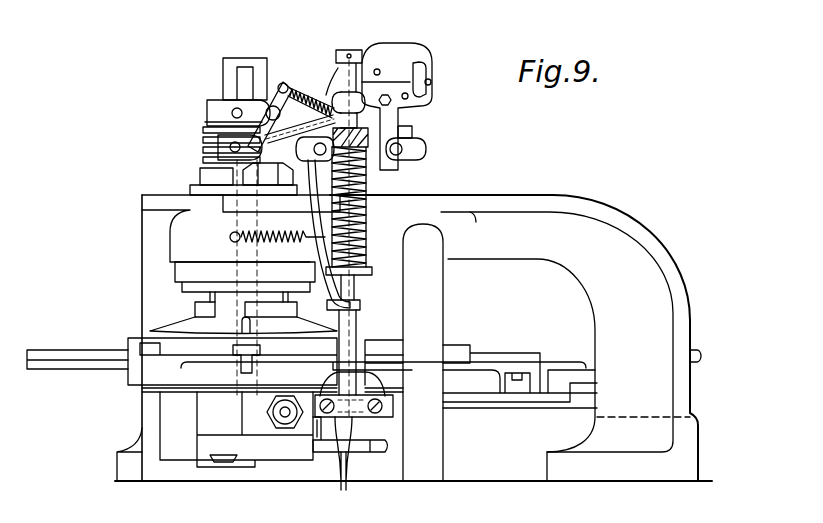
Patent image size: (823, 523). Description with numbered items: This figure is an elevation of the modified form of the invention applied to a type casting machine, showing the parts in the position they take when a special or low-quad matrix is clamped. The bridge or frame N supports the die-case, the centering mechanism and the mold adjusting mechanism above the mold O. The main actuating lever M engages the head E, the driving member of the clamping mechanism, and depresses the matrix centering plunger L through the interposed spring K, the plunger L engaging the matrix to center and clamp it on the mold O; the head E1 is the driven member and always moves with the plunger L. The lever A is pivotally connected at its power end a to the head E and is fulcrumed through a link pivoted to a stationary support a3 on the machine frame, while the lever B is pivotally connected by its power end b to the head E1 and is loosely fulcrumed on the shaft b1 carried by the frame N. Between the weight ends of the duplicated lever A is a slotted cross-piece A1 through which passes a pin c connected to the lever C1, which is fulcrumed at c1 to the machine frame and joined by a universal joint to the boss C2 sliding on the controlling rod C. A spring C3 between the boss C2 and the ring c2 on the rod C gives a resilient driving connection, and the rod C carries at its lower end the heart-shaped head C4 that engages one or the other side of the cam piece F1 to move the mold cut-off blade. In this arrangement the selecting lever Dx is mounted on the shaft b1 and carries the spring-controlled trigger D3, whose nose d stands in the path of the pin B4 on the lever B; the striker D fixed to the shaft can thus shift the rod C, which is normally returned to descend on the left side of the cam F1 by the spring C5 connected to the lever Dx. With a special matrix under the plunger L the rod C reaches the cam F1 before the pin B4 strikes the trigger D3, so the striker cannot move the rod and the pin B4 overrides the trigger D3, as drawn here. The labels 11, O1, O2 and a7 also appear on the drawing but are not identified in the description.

The bridge or frame N is at (413, 338).
The matrix centering plunger L is at (243, 167).
The lever B is at (265, 200).
The pin B4 is at (208, 166).
The power end of lever B b is at (200, 162).
The table plate 11 is at (292, 326).
The mold O is at (236, 429).
The shoulder or ring c2 is at (383, 266).
The spring C3 is at (366, 237).
The controlling member C is at (357, 291).
The cam piece C4 is at (378, 58).
The clamp O1 is at (394, 406).
The bracket O2 is at (318, 434).
The heart-shaped cam piece F1 is at (343, 484).
The spring C5 is at (232, 234).
The designating or selecting member D is at (300, 242).
The main actuating lever M is at (262, 72).
The driving member of the matrix clamping mechanism E is at (215, 100).
The power end of lever A a is at (198, 112).
The spring K is at (203, 120).
The nose of trigger d is at (203, 133).
The driven member of the matrix clamping mechanism E1 is at (210, 150).
The trigger-piece D3 is at (286, 82).
The selecting lever Dx is at (318, 90).
The lever A is at (312, 100).
The rod a7 is at (340, 70).
The lever C1 is at (422, 64).
The slotted cross-piece A1 is at (428, 78).
The pin c is at (425, 90).
The fulcrum of lever C' c1 is at (434, 100).
The boss C2 is at (400, 114).
The pivot or shaft b1 is at (398, 128).
The stationary support a3 is at (428, 151).